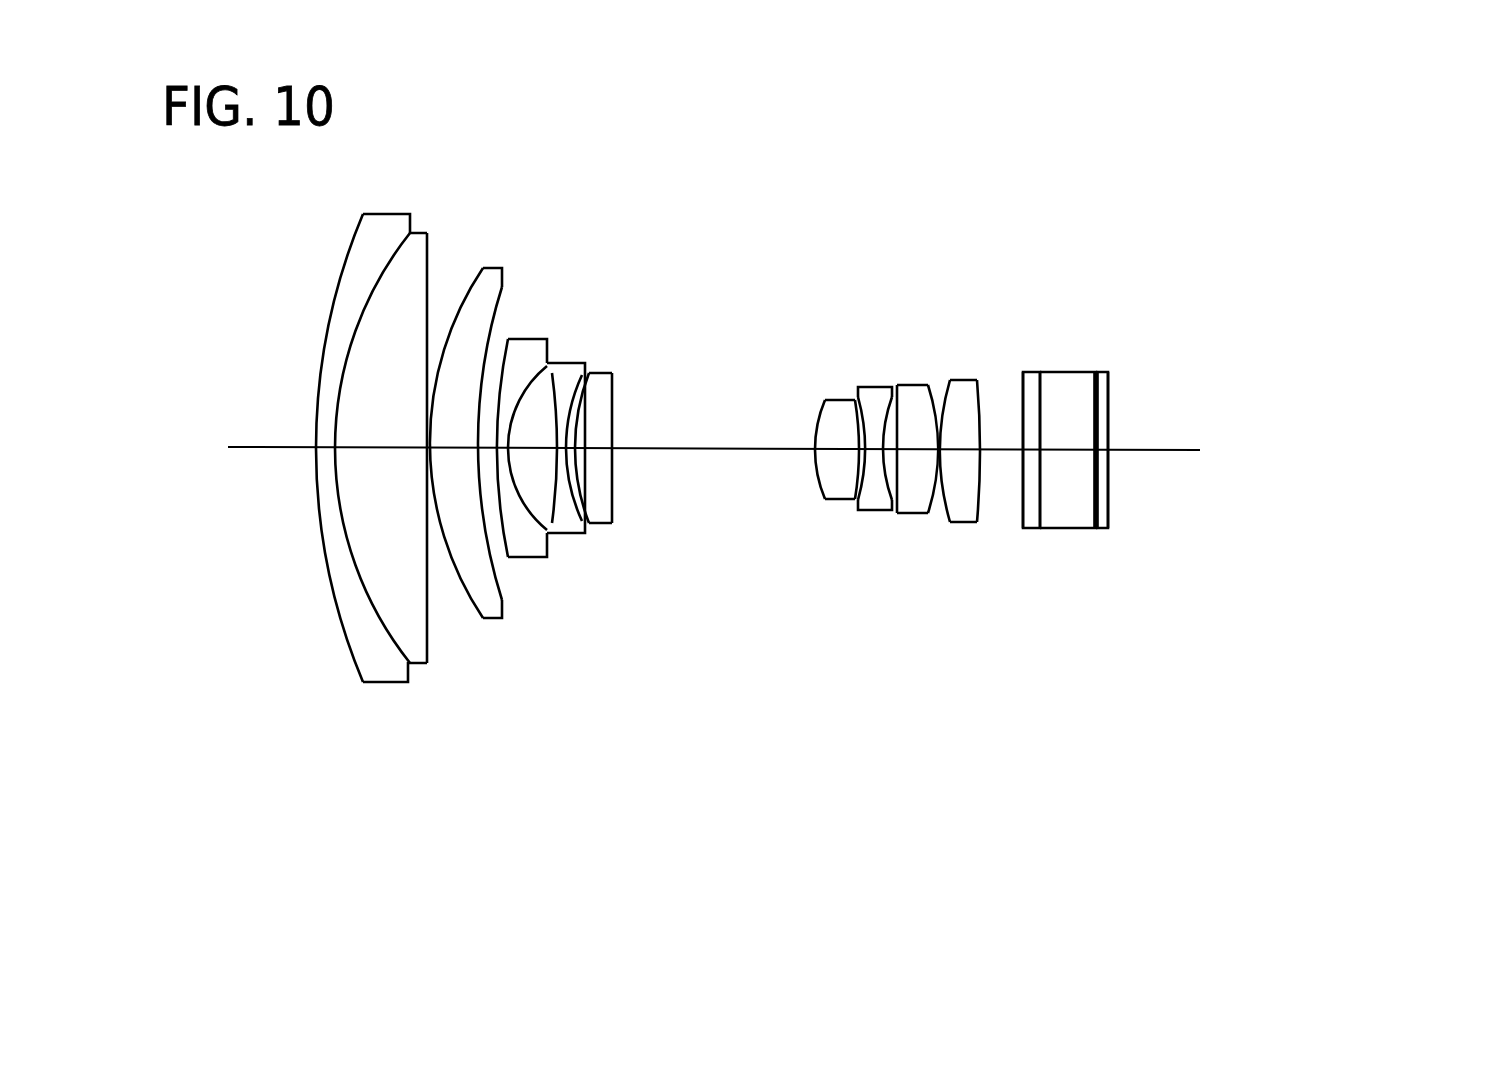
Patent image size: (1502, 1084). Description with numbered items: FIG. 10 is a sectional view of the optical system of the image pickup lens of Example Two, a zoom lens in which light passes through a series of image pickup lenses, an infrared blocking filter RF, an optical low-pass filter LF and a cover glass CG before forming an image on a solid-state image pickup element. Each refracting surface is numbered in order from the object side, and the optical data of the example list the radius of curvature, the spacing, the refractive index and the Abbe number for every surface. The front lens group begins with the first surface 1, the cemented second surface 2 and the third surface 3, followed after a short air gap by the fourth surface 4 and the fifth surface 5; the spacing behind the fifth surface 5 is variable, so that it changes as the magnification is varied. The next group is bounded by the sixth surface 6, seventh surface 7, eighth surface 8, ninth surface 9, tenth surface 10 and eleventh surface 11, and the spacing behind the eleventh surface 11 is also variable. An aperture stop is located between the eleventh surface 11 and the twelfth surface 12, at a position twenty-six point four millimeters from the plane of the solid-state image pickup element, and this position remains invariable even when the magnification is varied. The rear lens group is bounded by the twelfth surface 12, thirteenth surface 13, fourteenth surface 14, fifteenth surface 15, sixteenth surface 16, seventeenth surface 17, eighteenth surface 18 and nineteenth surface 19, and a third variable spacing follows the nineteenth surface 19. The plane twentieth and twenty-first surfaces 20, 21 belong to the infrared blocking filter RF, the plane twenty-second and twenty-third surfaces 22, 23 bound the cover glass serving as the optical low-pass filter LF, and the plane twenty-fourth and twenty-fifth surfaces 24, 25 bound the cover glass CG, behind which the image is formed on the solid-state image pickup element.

The first surface 1 is at (340, 618).
The second surface 2 is at (378, 622).
The third surface 3 is at (427, 647).
The fourth surface 4 is at (472, 603).
The fifth surface 5 is at (502, 618).
The sixth surface 6 is at (497, 557).
The seventh surface 7 is at (540, 518).
The eighth surface 8 is at (552, 528).
The ninth surface 9 is at (578, 515).
The tenth surface 10 is at (586, 508).
The eleventh surface 11 is at (612, 515).
The twelfth surface 12 is at (815, 480).
The thirteenth surface 13 is at (857, 480).
The fourteenth surface 14 is at (863, 500).
The fifteenth surface 15 is at (885, 500).
The sixteenth surface 16 is at (902, 495).
The seventeenth surface 17 is at (935, 498).
The eighteenth surface 18 is at (948, 515).
The nineteenth surface 19 is at (977, 522).
The twentieth surface 20 is at (1024, 512).
The twenty-first surface 21 is at (1040, 497).
The twenty-second surface 22 is at (1040, 497).
The twenty-third surface 23 is at (1095, 500).
The twenty-fourth surface 24 is at (1098, 490).
The twenty-fifth surface 25 is at (1108, 475).
The infrared blocking filter RF is at (1033, 372).
The optical low-pass filter LF is at (1079, 372).
The cover glass CG is at (1103, 372).